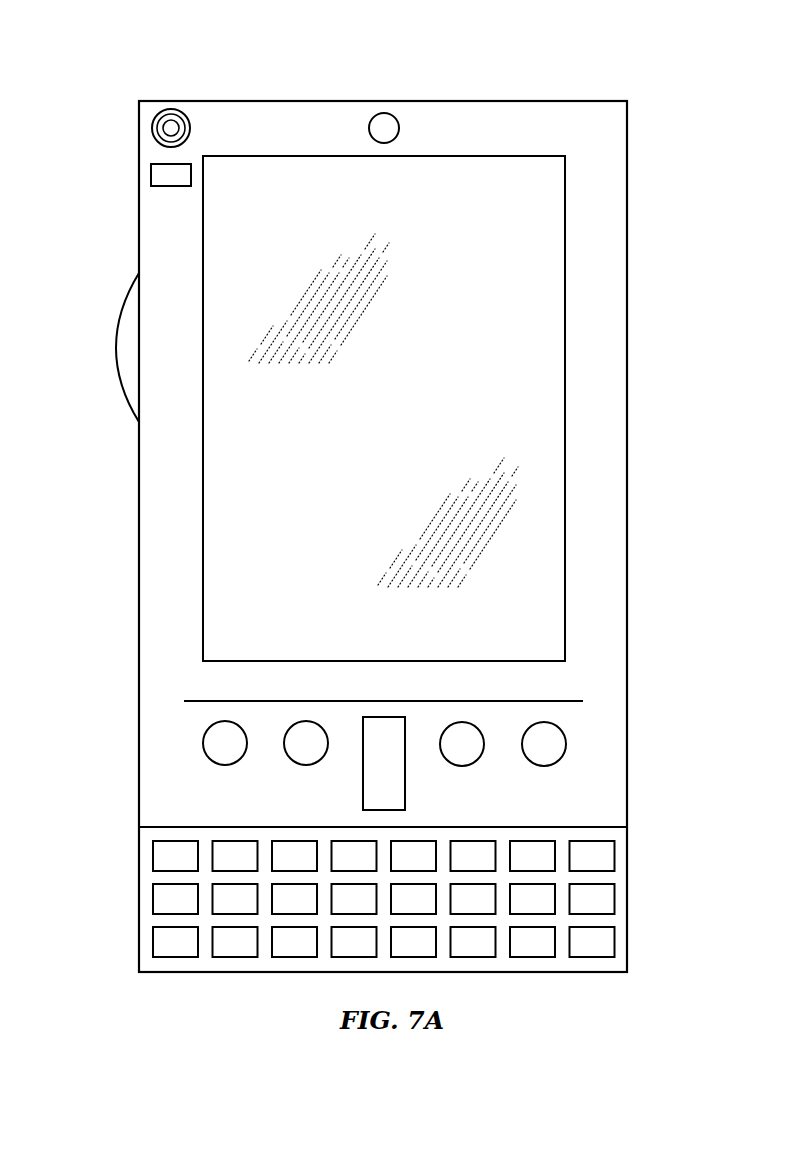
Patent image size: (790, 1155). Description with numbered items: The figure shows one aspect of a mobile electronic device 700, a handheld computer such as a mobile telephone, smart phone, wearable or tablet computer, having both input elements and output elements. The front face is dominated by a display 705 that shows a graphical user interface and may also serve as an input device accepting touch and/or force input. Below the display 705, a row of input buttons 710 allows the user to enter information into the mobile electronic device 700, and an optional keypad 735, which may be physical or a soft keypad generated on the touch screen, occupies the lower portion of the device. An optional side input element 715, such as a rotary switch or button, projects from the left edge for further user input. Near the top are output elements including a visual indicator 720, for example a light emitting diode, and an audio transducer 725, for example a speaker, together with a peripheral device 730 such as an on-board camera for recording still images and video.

The mobile electronic device 700 is at (627, 194).
The display 705 is at (237, 530).
The input buttons 710 is at (363, 787).
The side input element 715 is at (116, 345).
The visual indicator 720 is at (150, 178).
The audio transducer 725 is at (150, 130).
The peripheral device 730 is at (383, 112).
The keypad 735 is at (146, 906).